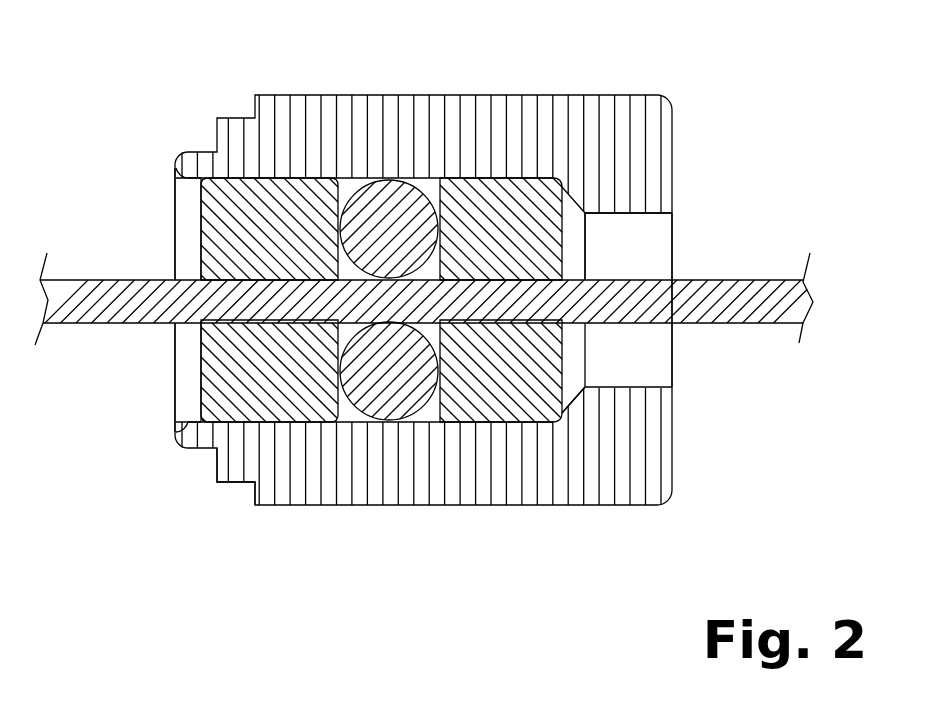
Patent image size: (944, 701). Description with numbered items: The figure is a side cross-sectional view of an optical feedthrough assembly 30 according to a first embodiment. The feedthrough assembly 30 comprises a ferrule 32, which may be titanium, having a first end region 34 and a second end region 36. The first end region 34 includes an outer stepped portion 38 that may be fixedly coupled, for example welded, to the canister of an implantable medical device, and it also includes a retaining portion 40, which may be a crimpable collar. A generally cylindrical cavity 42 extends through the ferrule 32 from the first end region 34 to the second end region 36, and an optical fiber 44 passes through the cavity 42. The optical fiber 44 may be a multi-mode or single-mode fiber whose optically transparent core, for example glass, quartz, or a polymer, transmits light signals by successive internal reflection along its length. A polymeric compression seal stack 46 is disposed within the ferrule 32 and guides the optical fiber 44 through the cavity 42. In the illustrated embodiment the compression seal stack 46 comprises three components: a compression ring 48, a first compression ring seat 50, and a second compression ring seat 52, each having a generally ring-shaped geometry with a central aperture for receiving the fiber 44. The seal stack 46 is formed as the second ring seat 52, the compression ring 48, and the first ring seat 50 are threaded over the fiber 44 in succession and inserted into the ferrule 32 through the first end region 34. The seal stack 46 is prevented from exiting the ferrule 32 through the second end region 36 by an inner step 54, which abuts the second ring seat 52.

The optical feedthrough assembly 30 is at (125, 108).
The ferrule 32 is at (275, 95).
The first end region 34 is at (173, 247).
The second end region 36 is at (670, 347).
The outer stepped portion 38 is at (258, 490).
The retaining portion 40 is at (183, 437).
The cavity 42 is at (640, 255).
The optical fiber 44 is at (732, 280).
The polymeric compression seal stack 46 is at (482, 210).
The compression ring 48 is at (383, 383).
The first compression ring seat 50 is at (220, 342).
The second compression ring seat 52 is at (515, 410).
The inner step 54 is at (573, 400).